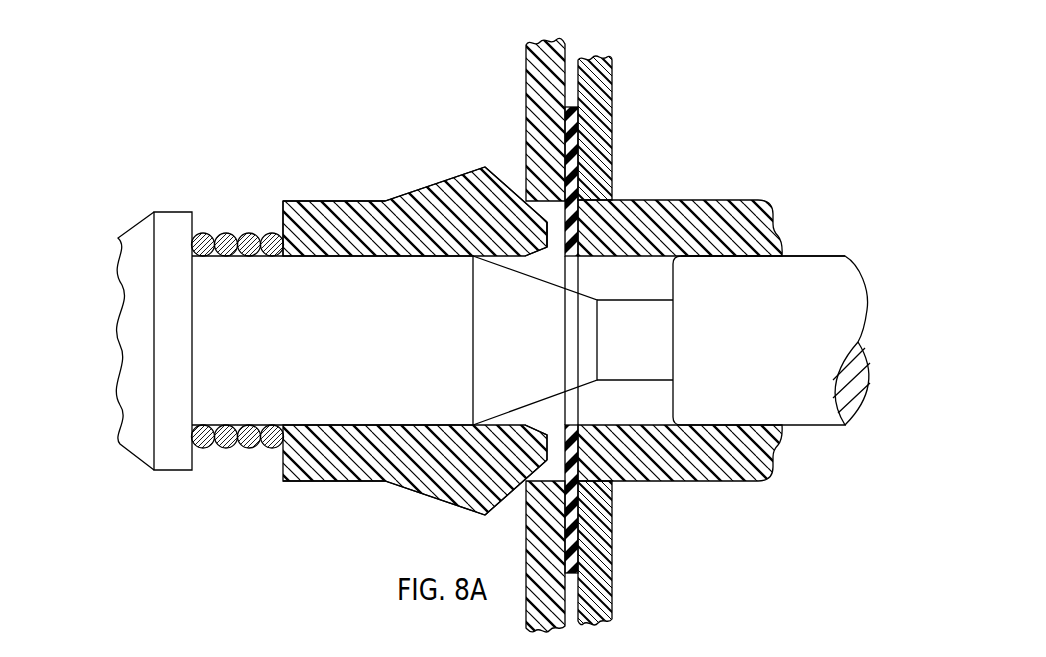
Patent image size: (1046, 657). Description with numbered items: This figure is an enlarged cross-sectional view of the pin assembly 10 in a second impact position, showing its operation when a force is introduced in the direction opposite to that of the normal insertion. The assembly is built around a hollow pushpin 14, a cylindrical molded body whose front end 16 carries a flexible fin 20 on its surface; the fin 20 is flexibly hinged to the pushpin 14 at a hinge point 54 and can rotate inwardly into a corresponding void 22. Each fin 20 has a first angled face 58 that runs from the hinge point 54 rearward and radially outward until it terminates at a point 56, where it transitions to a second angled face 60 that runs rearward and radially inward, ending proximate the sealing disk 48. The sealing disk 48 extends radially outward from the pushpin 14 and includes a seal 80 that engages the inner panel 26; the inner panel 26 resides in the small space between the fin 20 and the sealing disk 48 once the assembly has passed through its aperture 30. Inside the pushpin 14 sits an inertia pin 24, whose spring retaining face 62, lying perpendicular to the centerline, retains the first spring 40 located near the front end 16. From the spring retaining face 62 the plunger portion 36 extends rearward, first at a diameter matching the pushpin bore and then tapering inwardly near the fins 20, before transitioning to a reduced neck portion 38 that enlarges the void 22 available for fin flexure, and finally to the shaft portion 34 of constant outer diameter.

The pin assembly 10 is at (162, 152).
The hollow pushpin 14 is at (733, 200).
The front end 16 is at (281, 220).
The flexible fin 20 is at (325, 201).
The void 22 is at (633, 288).
The inertia pin 24 is at (800, 255).
The inner panel 26 is at (525, 98).
The aperture 30 is at (553, 227).
The shaft portion 34 is at (780, 357).
The plunger portion 36 is at (361, 357).
The neck portion 38 is at (644, 357).
The first spring 40 is at (231, 450).
The sealing disk 48 is at (613, 540).
The hinge point 54 is at (376, 200).
The point 56 is at (487, 166).
The first angled face 58 is at (447, 182).
The second angled face 60 is at (513, 187).
The spring retaining face 62 is at (197, 231).
The seal 80 is at (575, 110).